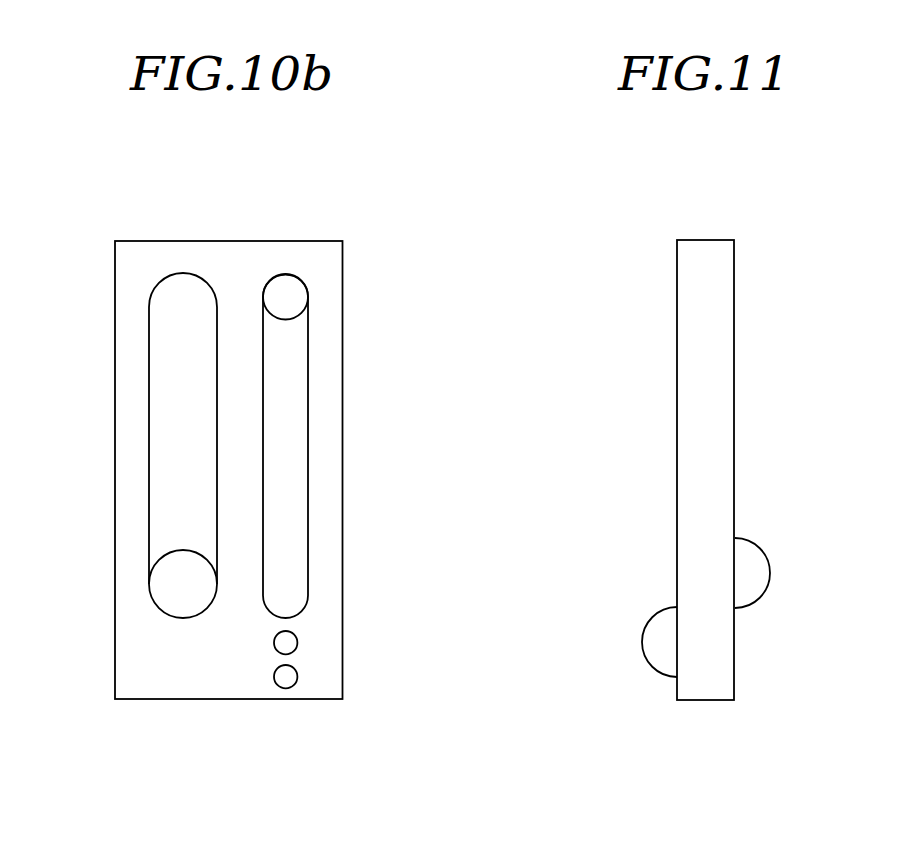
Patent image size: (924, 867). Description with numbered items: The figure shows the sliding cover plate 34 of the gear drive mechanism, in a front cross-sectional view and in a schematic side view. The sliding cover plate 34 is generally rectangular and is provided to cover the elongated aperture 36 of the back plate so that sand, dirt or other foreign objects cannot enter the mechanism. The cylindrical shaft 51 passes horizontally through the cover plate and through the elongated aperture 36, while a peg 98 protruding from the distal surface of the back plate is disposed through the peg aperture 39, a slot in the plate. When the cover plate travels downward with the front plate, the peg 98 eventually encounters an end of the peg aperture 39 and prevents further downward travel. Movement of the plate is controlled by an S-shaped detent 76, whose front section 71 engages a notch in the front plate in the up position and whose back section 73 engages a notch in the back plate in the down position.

In FIG. 10B, the sliding cover plate 34 is at (238, 258).
In FIG. 11, the sliding cover plate 34 is at (722, 210).
In FIG. 10B, the elongated aperture 36 is at (183, 480).
In FIG. 10B, the cylindrical shaft 51 is at (183, 583).
In FIG. 10B, the peg aperture 39 is at (287, 409).
In FIG. 10B, the peg 98 is at (285, 297).
In FIG. 10B, the S-shaped detent 76 is at (294, 658).
In FIG. 11, the back section of the S-shaped detent 73 is at (744, 558).
In FIG. 11, the front section of the S-shaped detent 71 is at (665, 627).